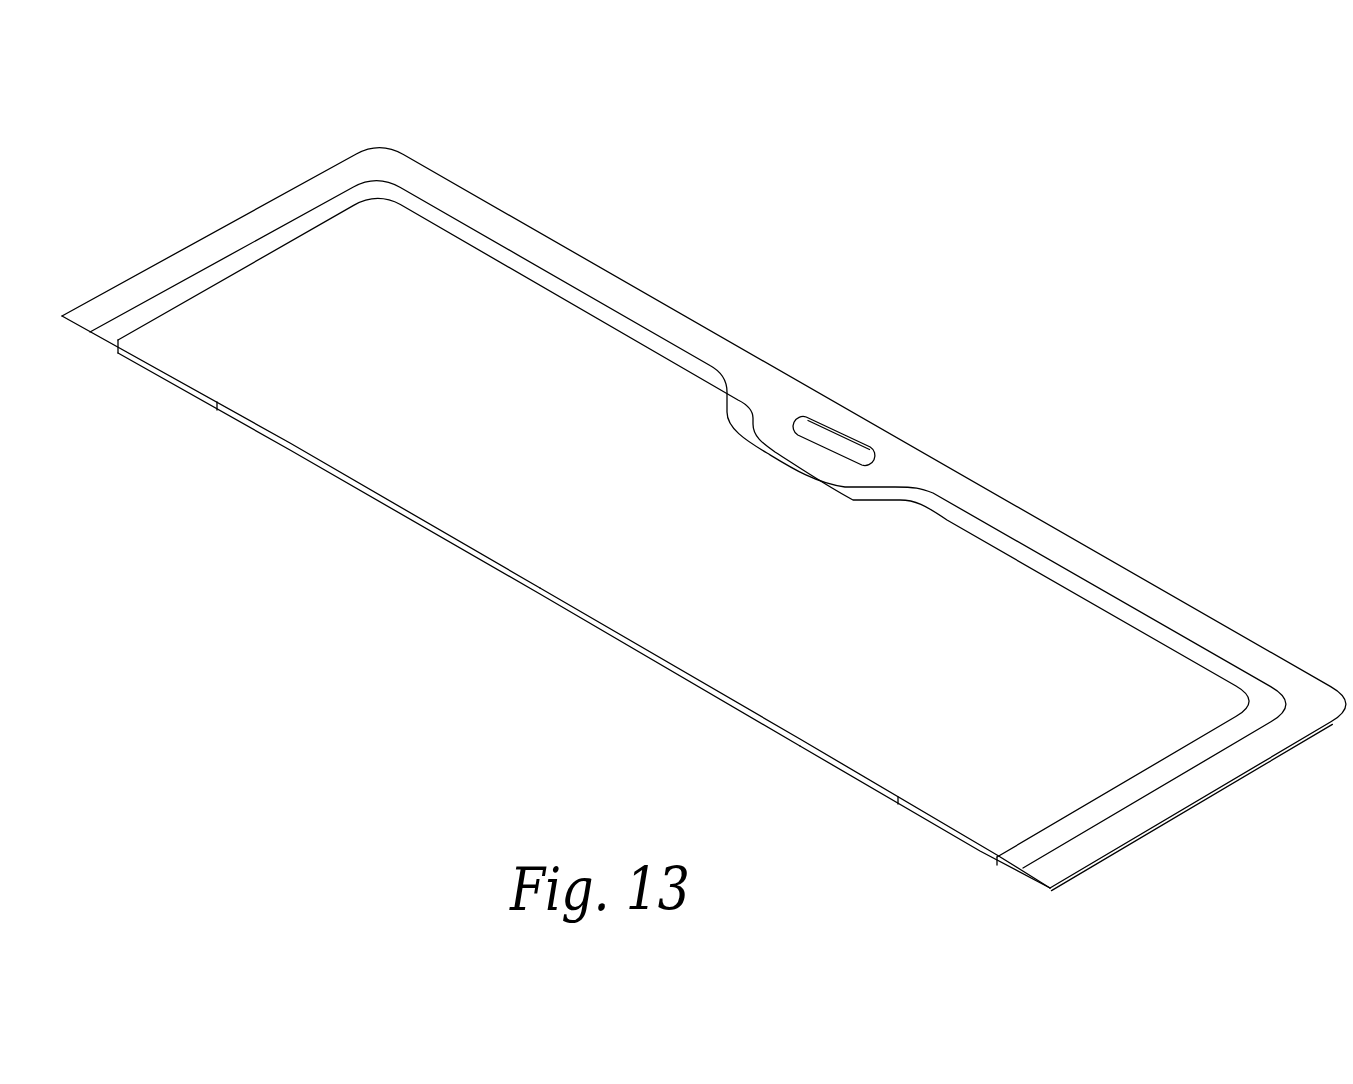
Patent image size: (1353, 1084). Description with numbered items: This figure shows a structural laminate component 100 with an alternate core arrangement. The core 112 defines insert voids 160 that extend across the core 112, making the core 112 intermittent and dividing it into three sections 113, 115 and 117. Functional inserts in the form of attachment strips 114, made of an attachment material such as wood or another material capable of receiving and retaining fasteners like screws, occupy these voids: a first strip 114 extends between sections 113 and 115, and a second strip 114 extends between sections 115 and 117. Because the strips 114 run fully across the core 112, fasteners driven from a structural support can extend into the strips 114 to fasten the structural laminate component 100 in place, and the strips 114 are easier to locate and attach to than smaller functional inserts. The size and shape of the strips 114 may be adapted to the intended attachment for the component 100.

The structural laminate component 100 is at (538, 176).
The core 112 is at (468, 553).
The first core section 113 is at (173, 383).
The attachment strip 114 is at (232, 413).
The second core section 115 is at (627, 640).
The third core section 117 is at (948, 828).
The insert void 160 is at (253, 423).